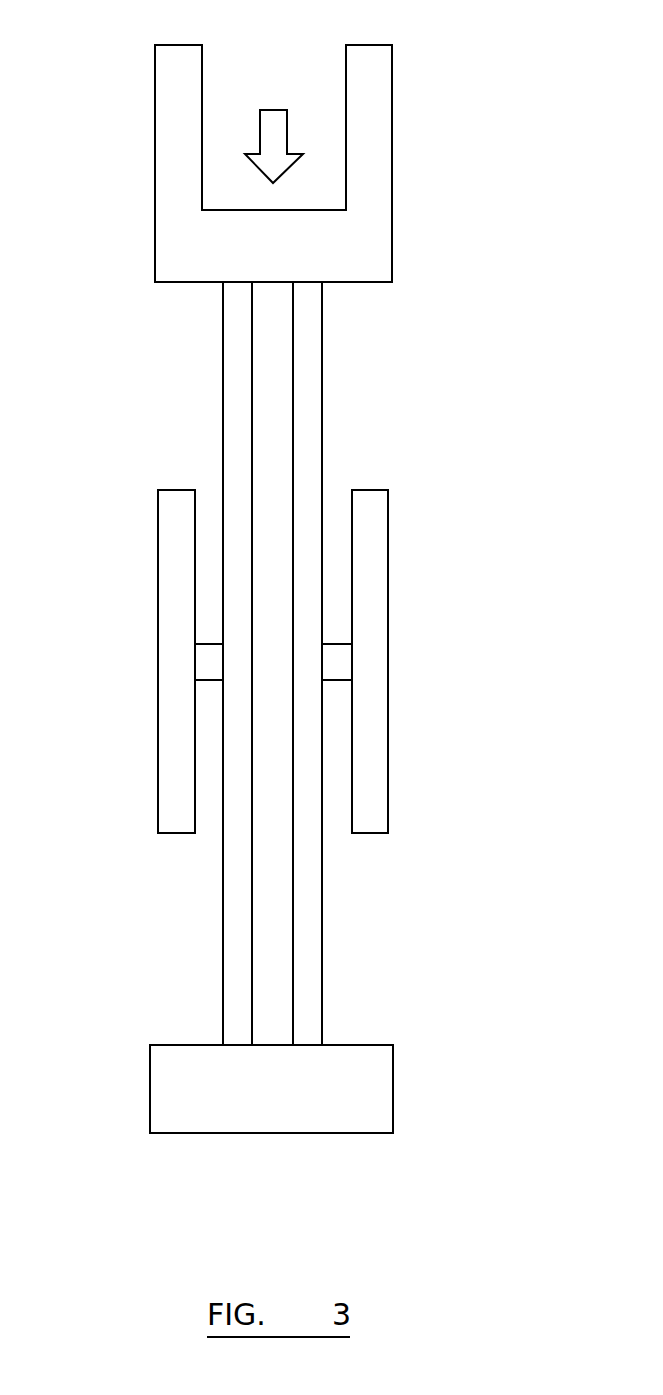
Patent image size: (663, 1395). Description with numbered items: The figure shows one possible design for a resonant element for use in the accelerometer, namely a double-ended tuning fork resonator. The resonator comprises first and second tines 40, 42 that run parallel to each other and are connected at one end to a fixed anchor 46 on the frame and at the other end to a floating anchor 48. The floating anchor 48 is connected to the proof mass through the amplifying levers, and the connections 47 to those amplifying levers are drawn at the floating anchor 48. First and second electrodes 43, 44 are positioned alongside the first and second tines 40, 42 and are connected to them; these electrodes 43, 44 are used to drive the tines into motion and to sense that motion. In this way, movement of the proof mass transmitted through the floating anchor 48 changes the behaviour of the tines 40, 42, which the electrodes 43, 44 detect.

The first tine 40 is at (307, 1001).
The second tine 42 is at (236, 1003).
The first electrode 43 is at (368, 797).
The second electrode 44 is at (175, 800).
The fixed anchor 46 is at (365, 1095).
The connections to the amplifying levers 47 is at (368, 90).
The floating anchor 48 is at (367, 251).